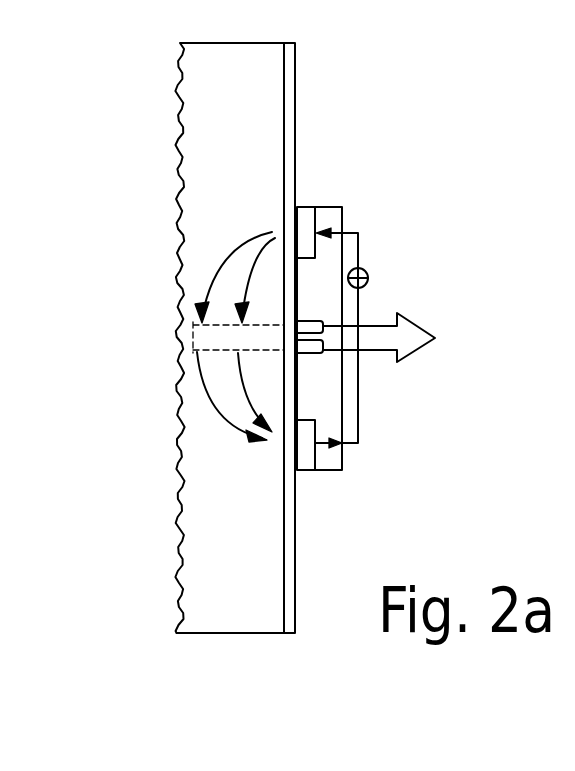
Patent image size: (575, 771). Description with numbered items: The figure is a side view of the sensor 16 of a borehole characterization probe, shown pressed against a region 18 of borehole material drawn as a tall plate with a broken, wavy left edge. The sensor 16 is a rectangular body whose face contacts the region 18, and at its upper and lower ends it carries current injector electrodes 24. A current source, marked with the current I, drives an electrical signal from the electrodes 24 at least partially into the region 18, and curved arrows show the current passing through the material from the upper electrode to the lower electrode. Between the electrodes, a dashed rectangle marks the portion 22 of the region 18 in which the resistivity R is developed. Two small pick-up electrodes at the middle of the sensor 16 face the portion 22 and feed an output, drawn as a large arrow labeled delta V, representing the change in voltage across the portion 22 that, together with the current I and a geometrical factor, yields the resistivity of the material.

The sensor 16 is at (337, 192).
The region 18 is at (192, 43).
The portion 22 is at (190, 340).
The current injector electrodes 24 is at (300, 207).